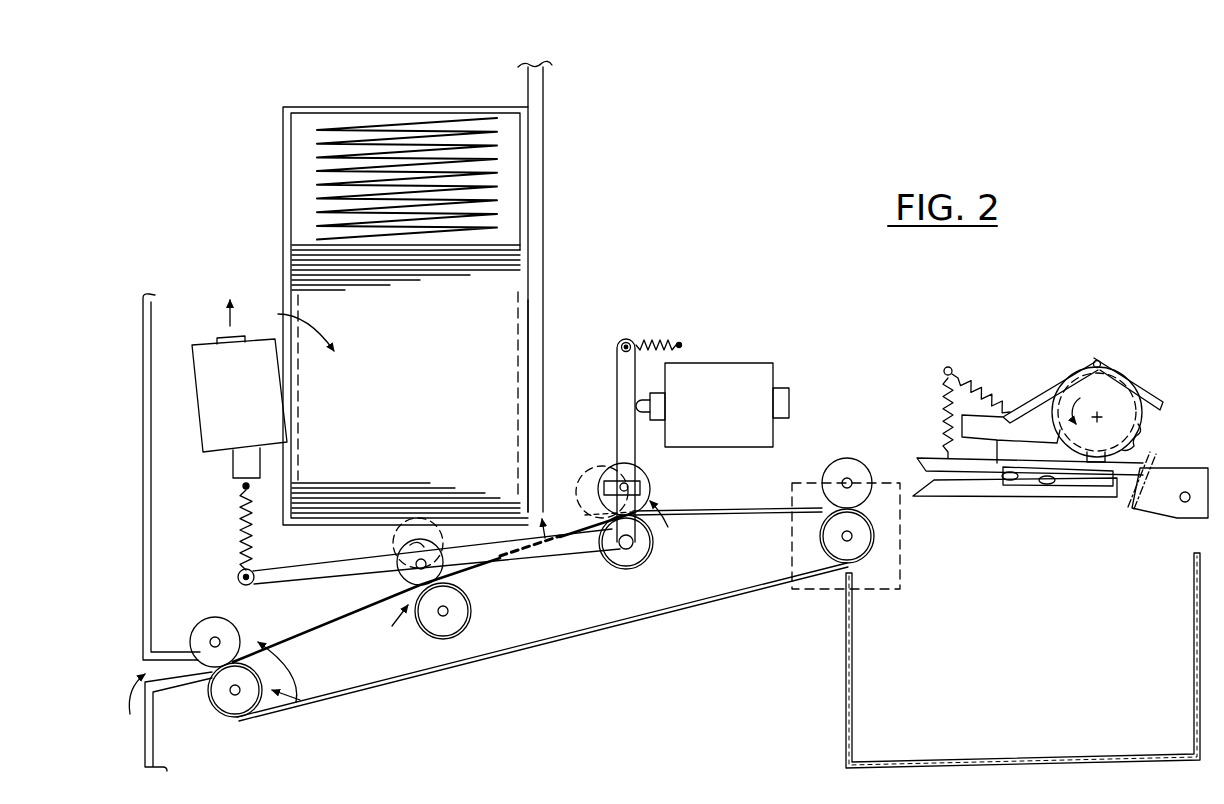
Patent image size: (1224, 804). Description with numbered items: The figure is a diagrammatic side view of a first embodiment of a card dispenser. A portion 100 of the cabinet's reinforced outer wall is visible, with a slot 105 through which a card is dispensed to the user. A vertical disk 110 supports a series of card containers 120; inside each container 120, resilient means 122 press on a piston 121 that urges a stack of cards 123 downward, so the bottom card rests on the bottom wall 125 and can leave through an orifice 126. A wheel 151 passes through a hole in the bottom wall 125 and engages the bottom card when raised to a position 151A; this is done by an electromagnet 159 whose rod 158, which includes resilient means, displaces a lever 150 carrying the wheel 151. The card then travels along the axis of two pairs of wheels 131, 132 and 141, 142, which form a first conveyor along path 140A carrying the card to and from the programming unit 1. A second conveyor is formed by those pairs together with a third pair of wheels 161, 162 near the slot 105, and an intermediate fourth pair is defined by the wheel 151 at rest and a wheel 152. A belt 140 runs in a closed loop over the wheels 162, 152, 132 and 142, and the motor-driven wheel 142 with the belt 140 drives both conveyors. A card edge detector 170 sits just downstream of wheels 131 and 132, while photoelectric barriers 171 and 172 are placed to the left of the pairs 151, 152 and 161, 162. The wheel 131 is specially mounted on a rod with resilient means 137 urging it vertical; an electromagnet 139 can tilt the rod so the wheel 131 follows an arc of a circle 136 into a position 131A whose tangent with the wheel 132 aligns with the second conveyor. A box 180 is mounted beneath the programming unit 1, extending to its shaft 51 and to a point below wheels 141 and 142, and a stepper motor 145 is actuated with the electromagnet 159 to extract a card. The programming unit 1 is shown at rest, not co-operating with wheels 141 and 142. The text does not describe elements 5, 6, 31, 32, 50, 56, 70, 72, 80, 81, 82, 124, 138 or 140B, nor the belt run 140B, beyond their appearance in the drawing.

The programming unit 1 is at (1019, 347).
The lower blade 5 is at (958, 475).
The upper blade 6 is at (1024, 475).
The rotary cam 31 is at (1118, 382).
The cam notch 32 is at (1140, 440).
The mounting bracket 50 is at (1168, 473).
The shaft 51 is at (1178, 504).
The stop 56 is at (1097, 470).
The actuating lever 70 is at (1036, 398).
The lever arm 72 is at (1148, 395).
The anchor pin 80 is at (948, 364).
The return spring 81 is at (944, 406).
The tension spring 82 is at (992, 392).
The outer wall portion 100 is at (145, 321).
The slot 105 is at (143, 712).
The vertical disk 110 is at (544, 98).
The card container 120 is at (430, 107).
The piston 121 is at (298, 246).
The resilient means 122 is at (301, 195).
The stack of cards 123 is at (291, 326).
The guide wall 124 is at (532, 304).
The bottom wall 125 is at (487, 525).
The orifice 126 is at (545, 541).
The wheel 131 is at (649, 480).
The wheel position 131A is at (604, 541).
The wheel 132 is at (629, 560).
The arc of a circle 136 is at (628, 476).
The resilient means 137 is at (648, 340).
The pivot arm 138 is at (618, 384).
The electromagnet 139 is at (738, 384).
The belt 140 is at (581, 636).
The first conveyor path 140A is at (741, 509).
The inclined belt run 140B is at (342, 634).
The wheel 141 is at (847, 470).
The motor-driven wheel 142 is at (818, 540).
The stepper motor 145 is at (824, 590).
The lever 150 is at (305, 578).
The wheel 151 is at (391, 578).
The raised wheel position 151A is at (394, 550).
The wheel 152 is at (472, 611).
The rod 158 is at (241, 520).
The electromagnet 159 is at (211, 435).
The wheel 161 is at (222, 629).
The wheel 162 is at (256, 713).
The card edge detector 170 is at (674, 522).
The photoelectric barrier 171 is at (387, 624).
The photoelectric barrier 172 is at (292, 687).
The box 180 is at (845, 717).